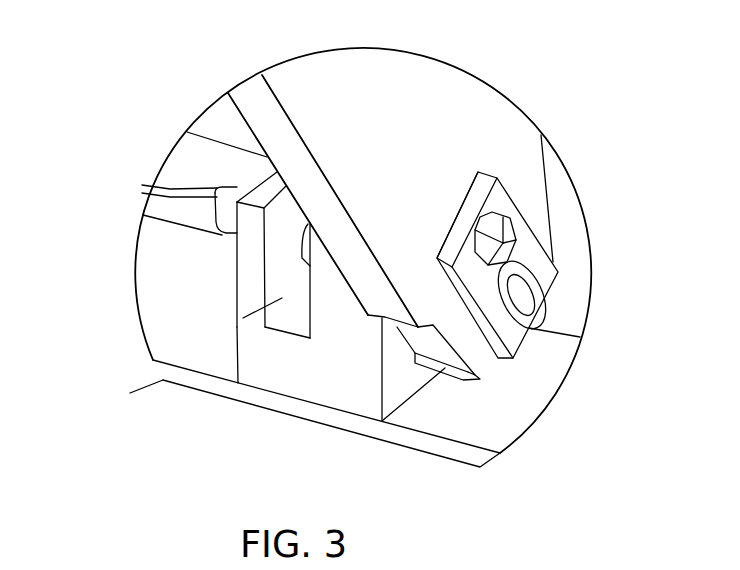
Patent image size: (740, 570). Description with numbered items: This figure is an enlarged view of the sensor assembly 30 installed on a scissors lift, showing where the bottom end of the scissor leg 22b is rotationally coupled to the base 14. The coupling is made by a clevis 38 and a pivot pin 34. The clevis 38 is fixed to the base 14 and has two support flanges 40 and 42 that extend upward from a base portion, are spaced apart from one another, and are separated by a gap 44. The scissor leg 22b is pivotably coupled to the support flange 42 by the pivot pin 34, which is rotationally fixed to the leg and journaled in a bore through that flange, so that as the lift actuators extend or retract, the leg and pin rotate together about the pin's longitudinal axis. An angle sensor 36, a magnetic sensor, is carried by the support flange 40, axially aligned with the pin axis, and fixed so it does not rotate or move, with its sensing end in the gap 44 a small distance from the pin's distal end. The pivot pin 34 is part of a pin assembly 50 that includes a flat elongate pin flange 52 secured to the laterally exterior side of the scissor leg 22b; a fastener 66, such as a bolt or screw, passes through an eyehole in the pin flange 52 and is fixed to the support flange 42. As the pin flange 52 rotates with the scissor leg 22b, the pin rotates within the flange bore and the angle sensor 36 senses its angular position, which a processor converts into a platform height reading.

The base 14 is at (497, 438).
The scissor leg 22b is at (426, 70).
The sensor assembly 30 is at (185, 408).
The pivot pin 34 is at (522, 295).
The angle sensor 36 is at (226, 238).
The clevis 38 is at (303, 390).
The support flange 40 is at (243, 298).
The support flange 42 is at (337, 307).
The gap 44 is at (300, 291).
The pin assembly 50 is at (553, 266).
The pin flange 52 is at (545, 208).
The fastener 66 is at (500, 213).